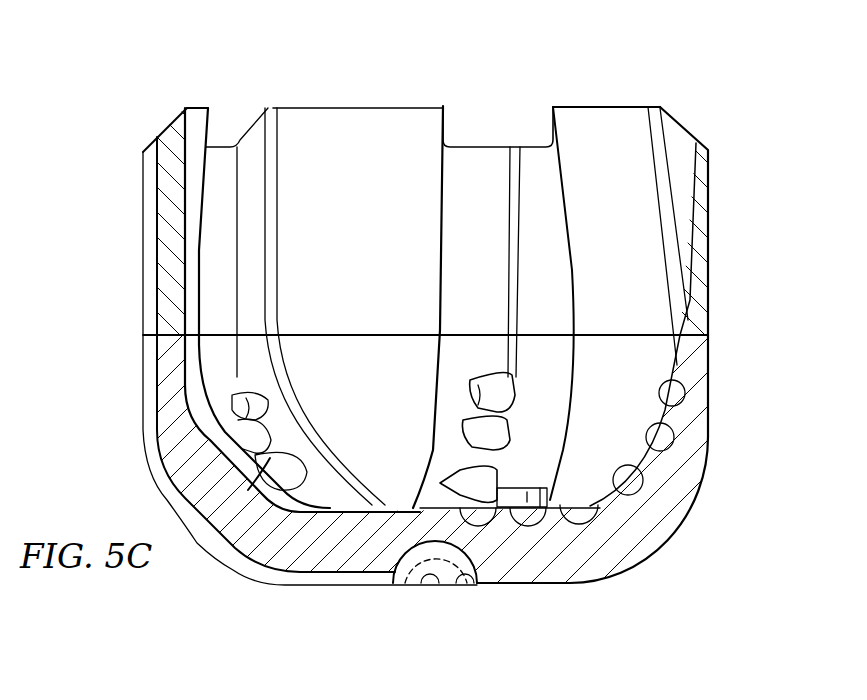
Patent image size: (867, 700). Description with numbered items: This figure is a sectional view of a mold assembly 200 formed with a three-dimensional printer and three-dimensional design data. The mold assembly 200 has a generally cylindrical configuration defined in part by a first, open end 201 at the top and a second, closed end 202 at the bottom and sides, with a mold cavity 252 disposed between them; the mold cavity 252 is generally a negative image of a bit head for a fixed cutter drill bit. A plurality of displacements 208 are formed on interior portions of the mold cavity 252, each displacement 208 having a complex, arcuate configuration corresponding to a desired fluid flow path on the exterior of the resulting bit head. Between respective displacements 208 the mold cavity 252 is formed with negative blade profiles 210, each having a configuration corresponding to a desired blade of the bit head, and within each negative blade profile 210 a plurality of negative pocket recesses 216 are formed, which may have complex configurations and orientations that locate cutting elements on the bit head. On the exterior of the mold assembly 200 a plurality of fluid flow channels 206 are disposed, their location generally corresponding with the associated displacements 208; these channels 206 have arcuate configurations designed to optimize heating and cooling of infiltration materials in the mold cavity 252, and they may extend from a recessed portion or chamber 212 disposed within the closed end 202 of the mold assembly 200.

The mold assembly 200 is at (182, 46).
The first, open end 201 is at (500, 145).
The second, closed end 202 is at (708, 392).
The fluid flow channels 206 is at (147, 262).
The displacements 208 is at (173, 120).
The negative blade profiles 210 is at (226, 162).
The recessed portion or chamber 212 is at (453, 576).
The negative pocket recesses 216 is at (470, 373).
The mold cavity 252 is at (380, 193).